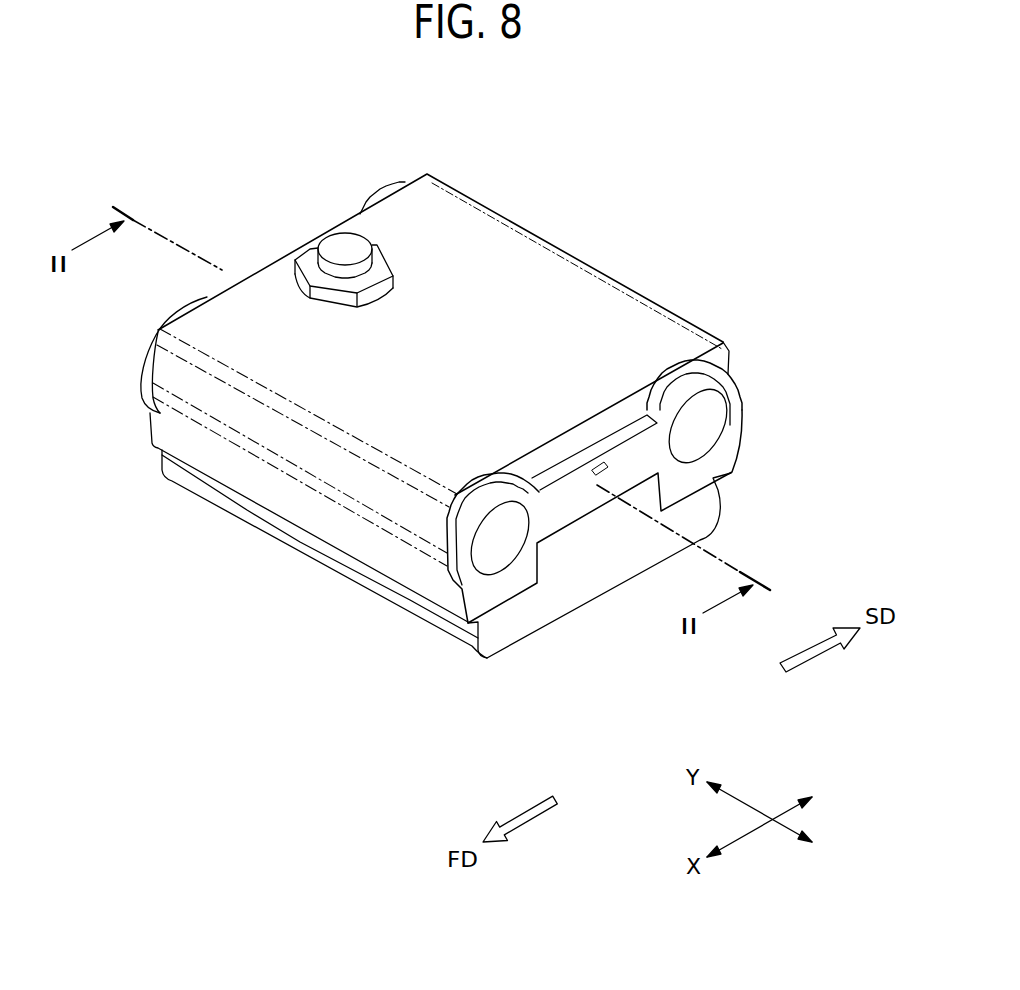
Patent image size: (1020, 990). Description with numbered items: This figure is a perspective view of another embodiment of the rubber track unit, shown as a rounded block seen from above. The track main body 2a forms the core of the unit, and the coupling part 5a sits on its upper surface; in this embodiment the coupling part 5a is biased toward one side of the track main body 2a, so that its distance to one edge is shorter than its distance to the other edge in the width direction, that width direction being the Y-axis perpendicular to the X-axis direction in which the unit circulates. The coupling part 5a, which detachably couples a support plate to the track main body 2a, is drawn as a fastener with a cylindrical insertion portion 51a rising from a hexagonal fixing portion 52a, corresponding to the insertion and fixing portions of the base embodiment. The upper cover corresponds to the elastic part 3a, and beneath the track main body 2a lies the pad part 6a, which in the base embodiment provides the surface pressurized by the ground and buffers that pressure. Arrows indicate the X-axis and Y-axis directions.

The track main body 2a is at (697, 370).
The housing top cover 3a is at (527, 256).
The coupling part 5a is at (337, 212).
The cylindrical head 51a is at (344, 248).
The hex nut 52a is at (314, 283).
The base 6a is at (511, 630).